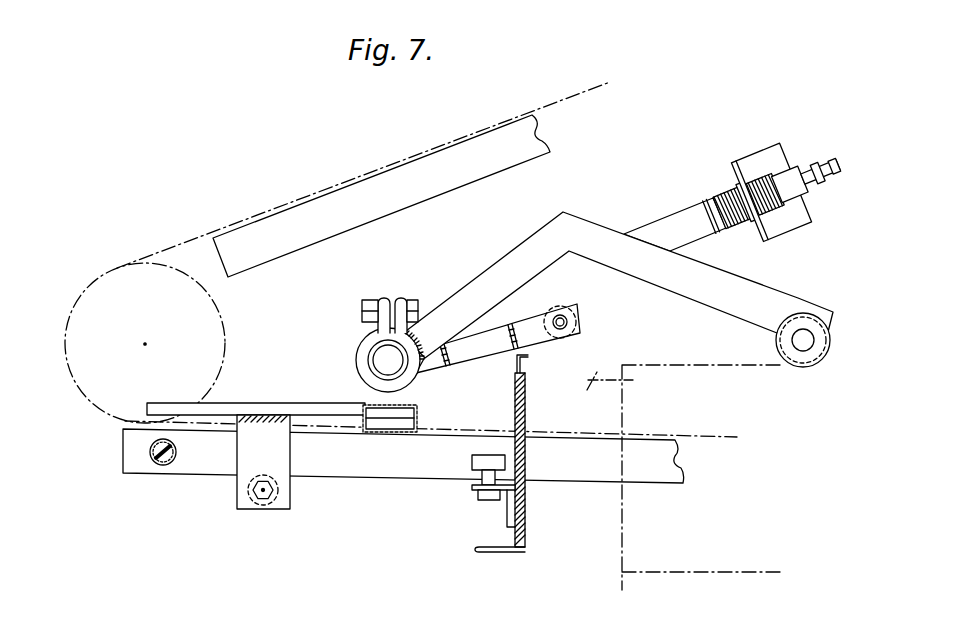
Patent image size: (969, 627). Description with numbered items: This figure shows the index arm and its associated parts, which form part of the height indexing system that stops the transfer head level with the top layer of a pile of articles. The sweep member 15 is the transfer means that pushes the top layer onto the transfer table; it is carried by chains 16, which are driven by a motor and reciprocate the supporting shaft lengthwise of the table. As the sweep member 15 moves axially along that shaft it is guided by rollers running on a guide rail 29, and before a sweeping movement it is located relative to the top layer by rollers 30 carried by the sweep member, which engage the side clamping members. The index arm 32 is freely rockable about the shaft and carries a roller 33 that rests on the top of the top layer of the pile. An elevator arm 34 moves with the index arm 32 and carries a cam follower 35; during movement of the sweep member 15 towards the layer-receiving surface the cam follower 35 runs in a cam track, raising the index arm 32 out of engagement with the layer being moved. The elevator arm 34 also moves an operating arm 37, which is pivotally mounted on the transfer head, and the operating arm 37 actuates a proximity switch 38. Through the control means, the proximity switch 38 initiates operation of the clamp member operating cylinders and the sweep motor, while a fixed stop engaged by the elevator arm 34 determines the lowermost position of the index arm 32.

The sweep member 15 is at (522, 511).
The chains 16 is at (168, 250).
The guide rail 29 is at (417, 413).
The rollers 30 is at (472, 459).
The index arm 32 is at (692, 287).
The roller 33 is at (777, 342).
The elevator arm 34 is at (493, 350).
The cam follower 35 is at (578, 327).
The operating arm 37 is at (673, 201).
The proximity switch 38 is at (731, 195).